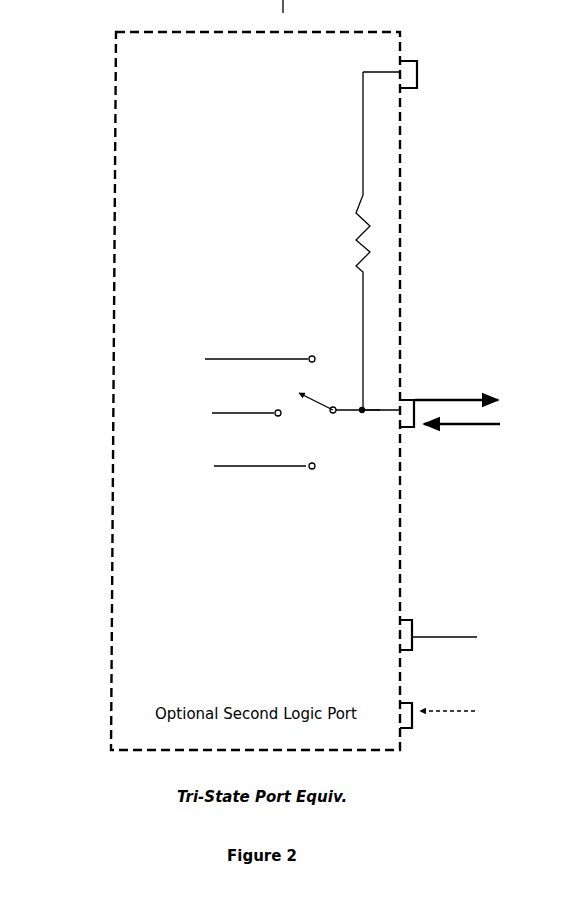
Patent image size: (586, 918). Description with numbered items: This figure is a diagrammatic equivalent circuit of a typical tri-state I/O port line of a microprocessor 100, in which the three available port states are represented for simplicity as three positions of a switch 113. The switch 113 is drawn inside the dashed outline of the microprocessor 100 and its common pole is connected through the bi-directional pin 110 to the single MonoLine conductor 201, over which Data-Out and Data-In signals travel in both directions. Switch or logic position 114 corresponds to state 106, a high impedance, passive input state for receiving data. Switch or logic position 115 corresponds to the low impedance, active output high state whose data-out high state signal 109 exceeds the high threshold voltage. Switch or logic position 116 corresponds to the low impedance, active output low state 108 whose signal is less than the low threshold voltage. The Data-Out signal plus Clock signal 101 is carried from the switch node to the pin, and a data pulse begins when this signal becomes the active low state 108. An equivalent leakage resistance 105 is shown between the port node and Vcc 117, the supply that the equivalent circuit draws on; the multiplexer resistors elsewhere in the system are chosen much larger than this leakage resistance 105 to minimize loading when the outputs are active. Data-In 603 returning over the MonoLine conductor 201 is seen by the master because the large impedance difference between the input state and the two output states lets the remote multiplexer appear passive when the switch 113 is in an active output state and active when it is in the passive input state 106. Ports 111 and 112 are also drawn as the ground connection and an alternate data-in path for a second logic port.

The microprocessor 100 is at (255, 391).
The Vcc 117 is at (428, 71).
The equivalent leakage resistance 105 is at (346, 229).
The passive input state 106 is at (232, 351).
The switch position for input state 114 is at (310, 353).
The switch 113 is at (331, 390).
The data-out high state signal 109 is at (230, 408).
The switch position for output high state 115 is at (277, 407).
The active output low state 108 is at (238, 461).
The switch position for output low state 116 is at (305, 473).
The Data-Out signal plus Clock signal 101 is at (377, 418).
The bi-directional pin 110 is at (408, 380).
The MonoLine conductor 201 is at (463, 388).
The Data-In 603 is at (460, 585).
The ground port 111 is at (405, 610).
The alternate data-in port 112 is at (412, 690).